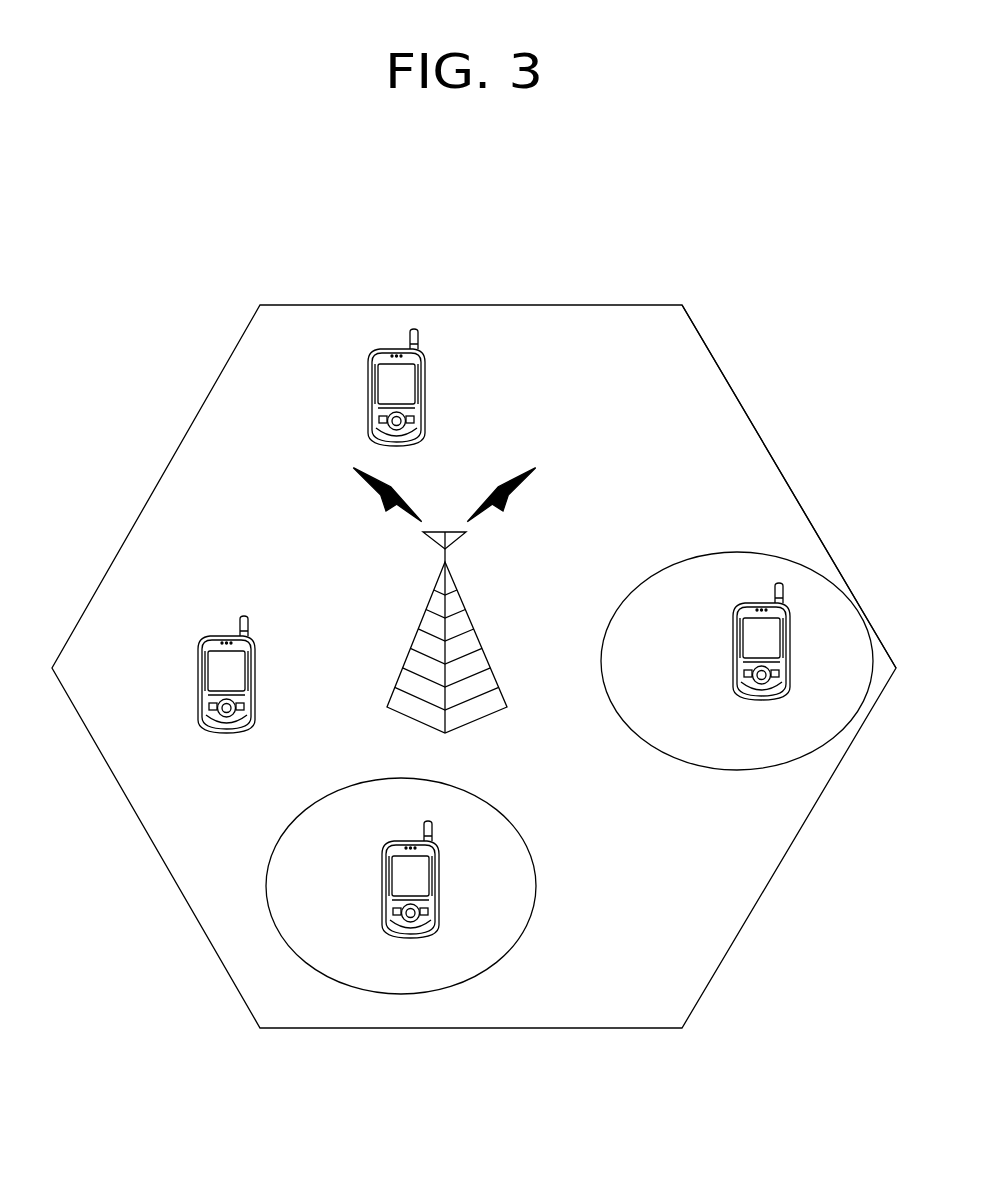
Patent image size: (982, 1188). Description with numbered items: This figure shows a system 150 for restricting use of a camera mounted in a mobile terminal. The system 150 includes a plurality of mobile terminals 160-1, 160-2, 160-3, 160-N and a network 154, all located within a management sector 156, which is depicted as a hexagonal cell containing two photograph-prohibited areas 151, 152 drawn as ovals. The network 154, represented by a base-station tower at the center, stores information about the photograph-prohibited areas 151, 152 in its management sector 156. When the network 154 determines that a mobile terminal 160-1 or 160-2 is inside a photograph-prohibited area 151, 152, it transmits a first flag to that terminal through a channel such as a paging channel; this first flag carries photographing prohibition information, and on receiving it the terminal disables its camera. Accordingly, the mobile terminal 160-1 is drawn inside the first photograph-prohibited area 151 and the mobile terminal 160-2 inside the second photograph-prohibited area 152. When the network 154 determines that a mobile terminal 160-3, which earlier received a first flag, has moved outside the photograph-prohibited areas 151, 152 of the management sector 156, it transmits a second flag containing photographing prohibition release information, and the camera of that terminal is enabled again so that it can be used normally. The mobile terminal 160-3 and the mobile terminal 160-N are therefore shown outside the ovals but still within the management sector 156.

The system 150 is at (706, 304).
The photograph-prohibited area 151 is at (536, 880).
The photograph-prohibited area 152 is at (601, 661).
The network 154 is at (466, 603).
The management sector 156 is at (741, 400).
The mobile terminal 160-1 is at (382, 883).
The mobile terminal 160-2 is at (733, 648).
The mobile terminal 160-3 is at (198, 679).
The mobile terminal 160-N is at (368, 393).